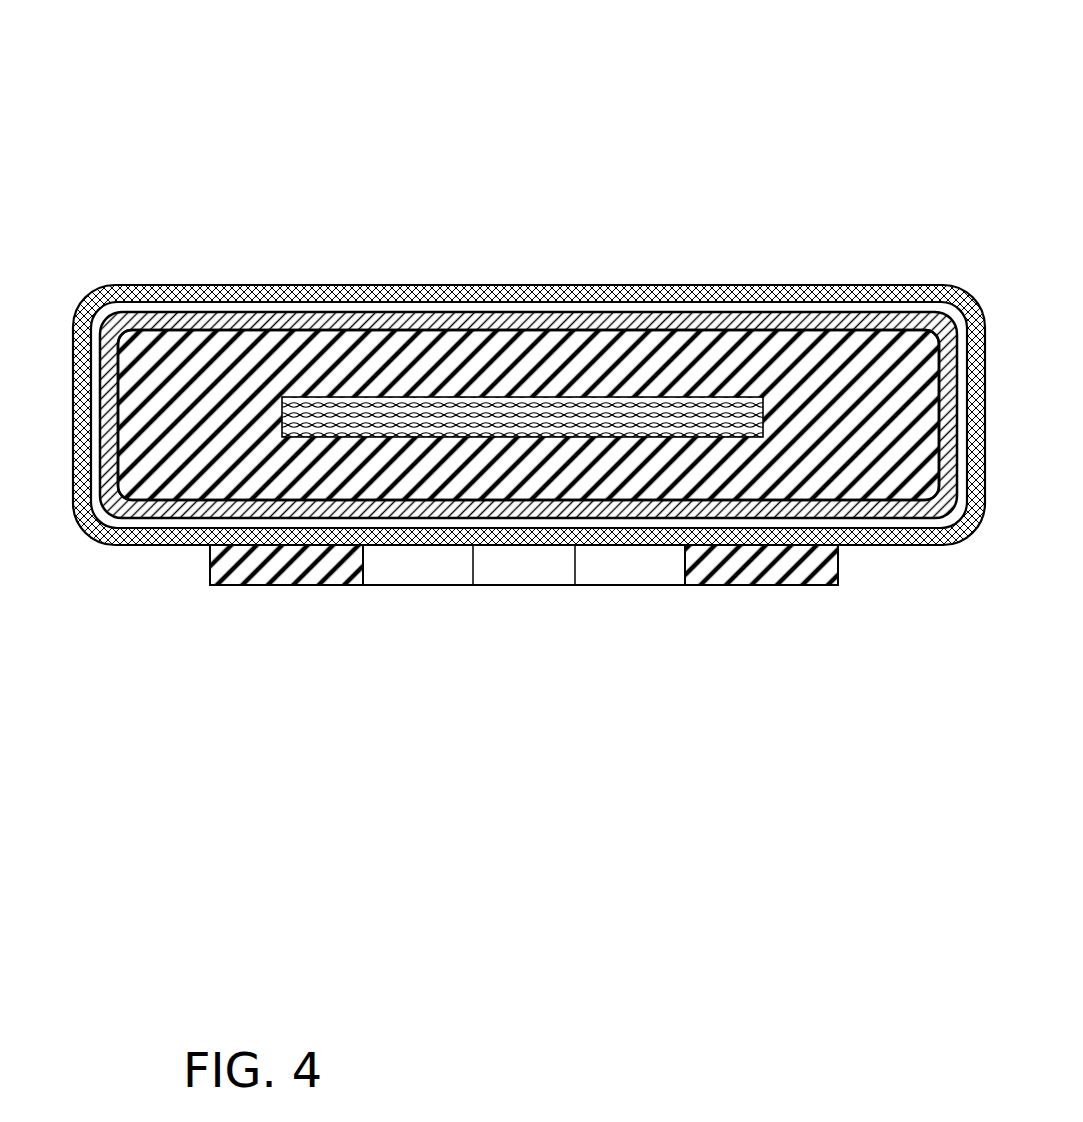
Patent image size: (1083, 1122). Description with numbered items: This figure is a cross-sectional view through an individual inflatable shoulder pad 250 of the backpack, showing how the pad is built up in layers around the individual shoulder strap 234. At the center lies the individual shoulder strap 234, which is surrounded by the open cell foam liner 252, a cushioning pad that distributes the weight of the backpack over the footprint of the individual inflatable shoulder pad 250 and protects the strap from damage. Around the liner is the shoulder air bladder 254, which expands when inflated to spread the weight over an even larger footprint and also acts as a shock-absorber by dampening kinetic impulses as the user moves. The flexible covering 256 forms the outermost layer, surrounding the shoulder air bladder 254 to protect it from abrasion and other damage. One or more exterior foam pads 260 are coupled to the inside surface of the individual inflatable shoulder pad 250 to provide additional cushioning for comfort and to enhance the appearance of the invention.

The individual inflatable shoulder pad 250 is at (69, 100).
The open cell foam liner 252 is at (640, 355).
The shoulder air bladder 254 is at (743, 318).
The flexible covering 256 is at (267, 287).
The individual shoulder strap 234 is at (497, 403).
The exterior foam pads 260 is at (283, 585).